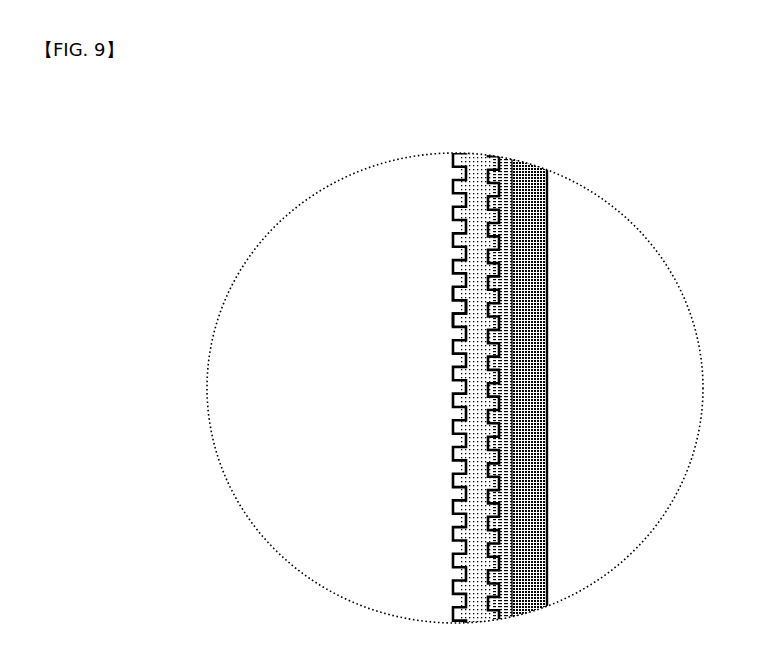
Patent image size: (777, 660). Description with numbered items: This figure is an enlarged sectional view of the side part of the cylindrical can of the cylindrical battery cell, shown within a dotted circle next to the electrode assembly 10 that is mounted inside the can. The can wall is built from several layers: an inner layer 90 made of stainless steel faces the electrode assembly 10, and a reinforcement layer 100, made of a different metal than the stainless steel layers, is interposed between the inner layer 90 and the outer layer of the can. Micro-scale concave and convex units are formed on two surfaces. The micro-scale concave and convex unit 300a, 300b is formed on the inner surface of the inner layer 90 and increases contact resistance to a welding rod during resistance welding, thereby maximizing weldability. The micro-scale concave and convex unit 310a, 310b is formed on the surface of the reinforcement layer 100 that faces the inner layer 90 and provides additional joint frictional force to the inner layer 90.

The electrode assembly 10 is at (248, 398).
The inner layer 90 is at (473, 393).
The micro-scale concave and convex unit 300a is at (459, 393).
The micro-scale concave and convex unit 300b is at (459, 307).
The micro-scale concave and convex unit 310a is at (500, 395).
The micro-scale concave and convex unit 310b is at (529, 390).
The reinforcement layer 100 is at (529, 390).